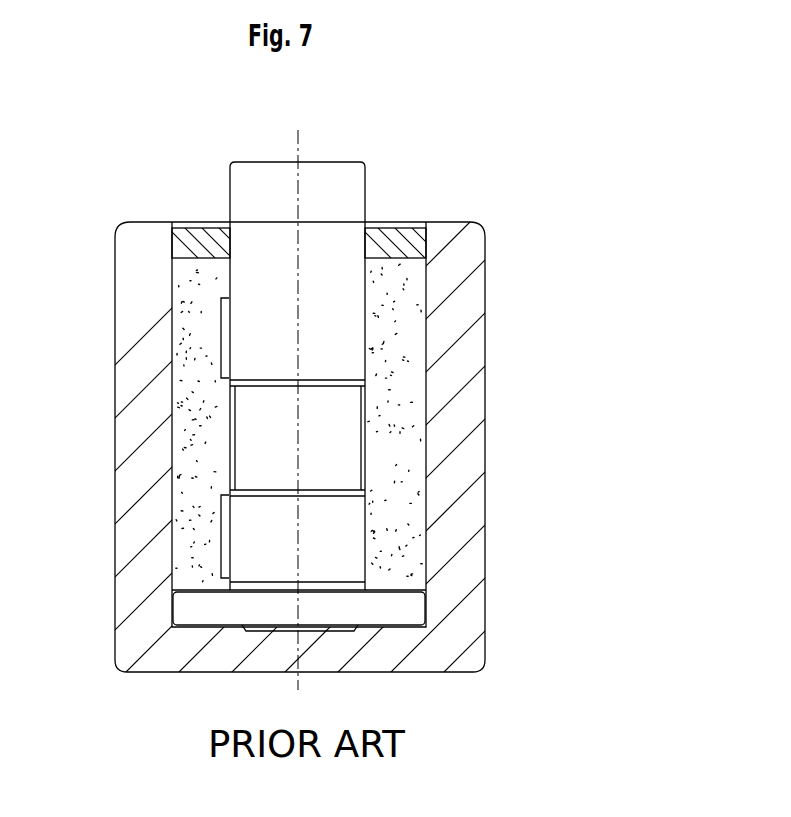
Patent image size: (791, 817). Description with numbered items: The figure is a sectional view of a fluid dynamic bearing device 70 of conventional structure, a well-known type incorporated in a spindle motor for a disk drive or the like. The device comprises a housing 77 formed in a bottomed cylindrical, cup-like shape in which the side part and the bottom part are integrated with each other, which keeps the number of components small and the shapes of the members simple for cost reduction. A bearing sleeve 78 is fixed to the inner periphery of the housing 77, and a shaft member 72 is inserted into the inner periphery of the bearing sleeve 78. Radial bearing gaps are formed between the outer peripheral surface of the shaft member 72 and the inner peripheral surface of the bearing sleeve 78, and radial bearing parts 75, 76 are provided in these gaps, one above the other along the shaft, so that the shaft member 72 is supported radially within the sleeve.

The fluid dynamic bearing device 70 is at (395, 400).
The shaft member 72 is at (372, 184).
The radial bearing part 75 is at (212, 337).
The radial bearing part 76 is at (212, 535).
The housing 77 is at (117, 226).
The bearing sleeve 78 is at (410, 345).